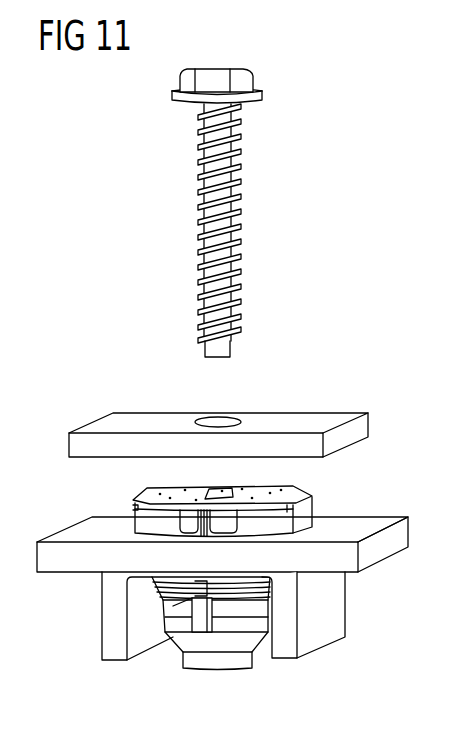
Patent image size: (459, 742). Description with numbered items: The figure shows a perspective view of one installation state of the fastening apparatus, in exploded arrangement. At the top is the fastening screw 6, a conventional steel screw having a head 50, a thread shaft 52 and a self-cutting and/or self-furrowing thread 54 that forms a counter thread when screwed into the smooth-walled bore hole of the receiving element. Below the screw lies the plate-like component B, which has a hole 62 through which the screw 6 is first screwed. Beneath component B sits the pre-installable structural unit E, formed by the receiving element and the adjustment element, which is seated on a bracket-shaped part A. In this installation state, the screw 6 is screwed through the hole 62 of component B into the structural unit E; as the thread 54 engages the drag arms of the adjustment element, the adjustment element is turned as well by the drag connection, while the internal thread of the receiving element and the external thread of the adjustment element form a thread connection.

The fastening screw 6 is at (154, 233).
The head 50 is at (218, 68).
The thread shaft 52 is at (225, 347).
The thread 54 is at (242, 227).
The hole 62 is at (216, 421).
The component B is at (330, 420).
The structural unit E is at (106, 499).
The bracket A is at (338, 562).